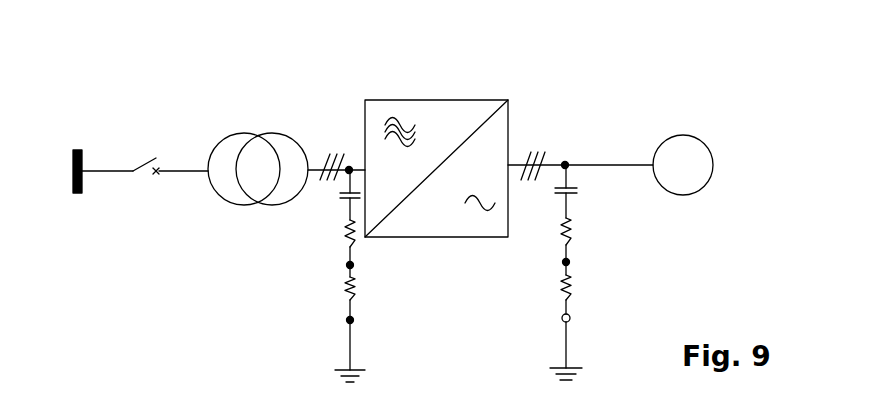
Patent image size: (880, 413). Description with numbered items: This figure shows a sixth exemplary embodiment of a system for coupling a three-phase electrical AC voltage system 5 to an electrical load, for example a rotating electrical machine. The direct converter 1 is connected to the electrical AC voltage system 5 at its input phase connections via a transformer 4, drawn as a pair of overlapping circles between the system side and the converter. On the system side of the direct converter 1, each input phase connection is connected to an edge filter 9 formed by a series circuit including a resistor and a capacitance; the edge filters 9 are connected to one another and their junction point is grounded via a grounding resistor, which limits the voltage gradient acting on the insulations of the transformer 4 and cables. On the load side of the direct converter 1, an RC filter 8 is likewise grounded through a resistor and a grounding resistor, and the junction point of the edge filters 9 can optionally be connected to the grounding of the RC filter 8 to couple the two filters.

The direct converter 1 is at (412, 100).
The transformer 4 is at (243, 133).
The electrical AC voltage system 5 is at (84, 135).
The RC filter 8 is at (582, 162).
The edge filter 9 is at (329, 256).